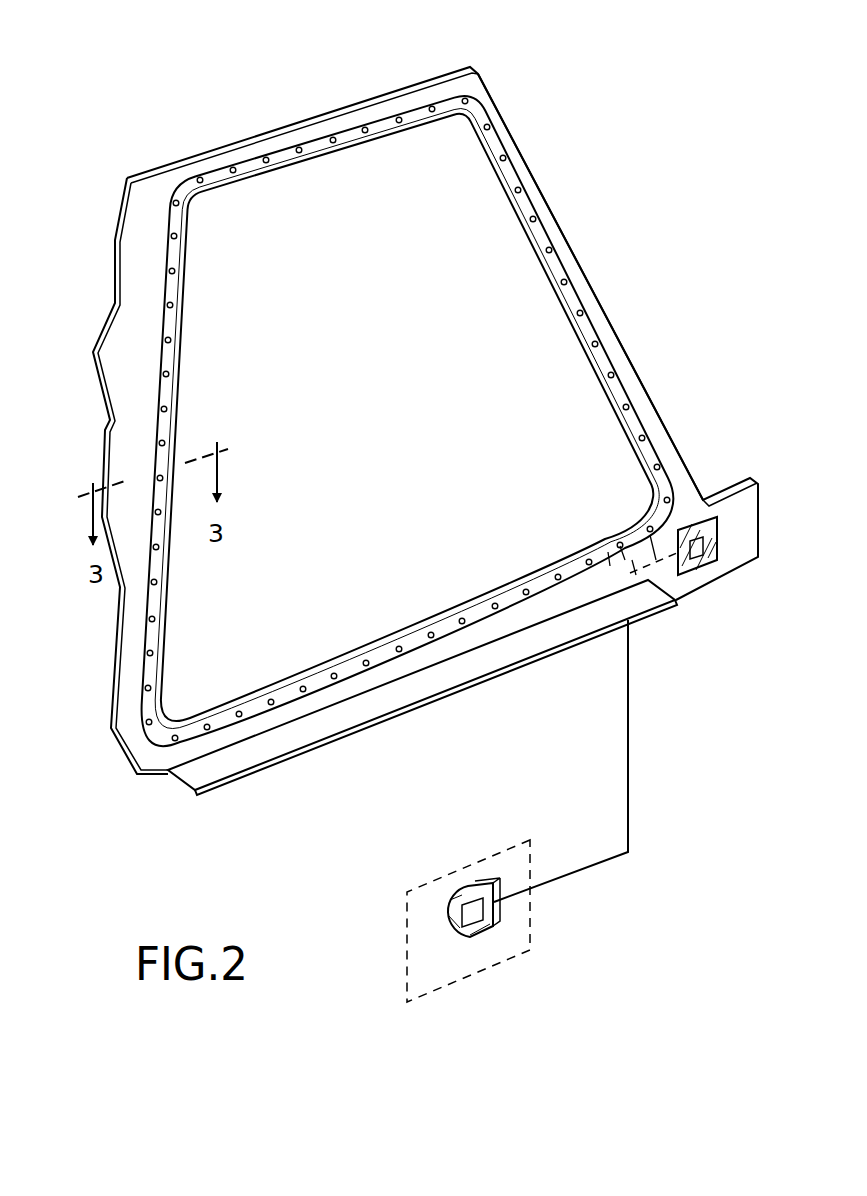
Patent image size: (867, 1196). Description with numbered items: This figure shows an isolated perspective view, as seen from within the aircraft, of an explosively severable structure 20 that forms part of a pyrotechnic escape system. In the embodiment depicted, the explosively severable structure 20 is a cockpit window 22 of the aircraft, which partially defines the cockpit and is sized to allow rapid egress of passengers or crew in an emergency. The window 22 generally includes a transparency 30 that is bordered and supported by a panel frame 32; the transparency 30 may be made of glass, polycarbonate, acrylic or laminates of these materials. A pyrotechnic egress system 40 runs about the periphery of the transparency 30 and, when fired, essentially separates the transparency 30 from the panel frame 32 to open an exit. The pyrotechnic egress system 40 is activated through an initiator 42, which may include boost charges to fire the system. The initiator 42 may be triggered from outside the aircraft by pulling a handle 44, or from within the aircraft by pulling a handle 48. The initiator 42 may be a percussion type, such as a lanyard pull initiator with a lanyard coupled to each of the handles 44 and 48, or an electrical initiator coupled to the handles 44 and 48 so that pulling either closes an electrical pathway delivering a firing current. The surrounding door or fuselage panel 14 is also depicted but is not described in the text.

The door panel 14 is at (140, 242).
The explosively severable structure 20 is at (592, 198).
The cockpit window 22 is at (618, 350).
The transparency 30 is at (426, 417).
The panel frame 32 is at (423, 111).
The pyrotechnic egress system 40 is at (262, 162).
The initiator 42 is at (620, 548).
The handle 44 is at (466, 958).
The handle 48 is at (707, 562).